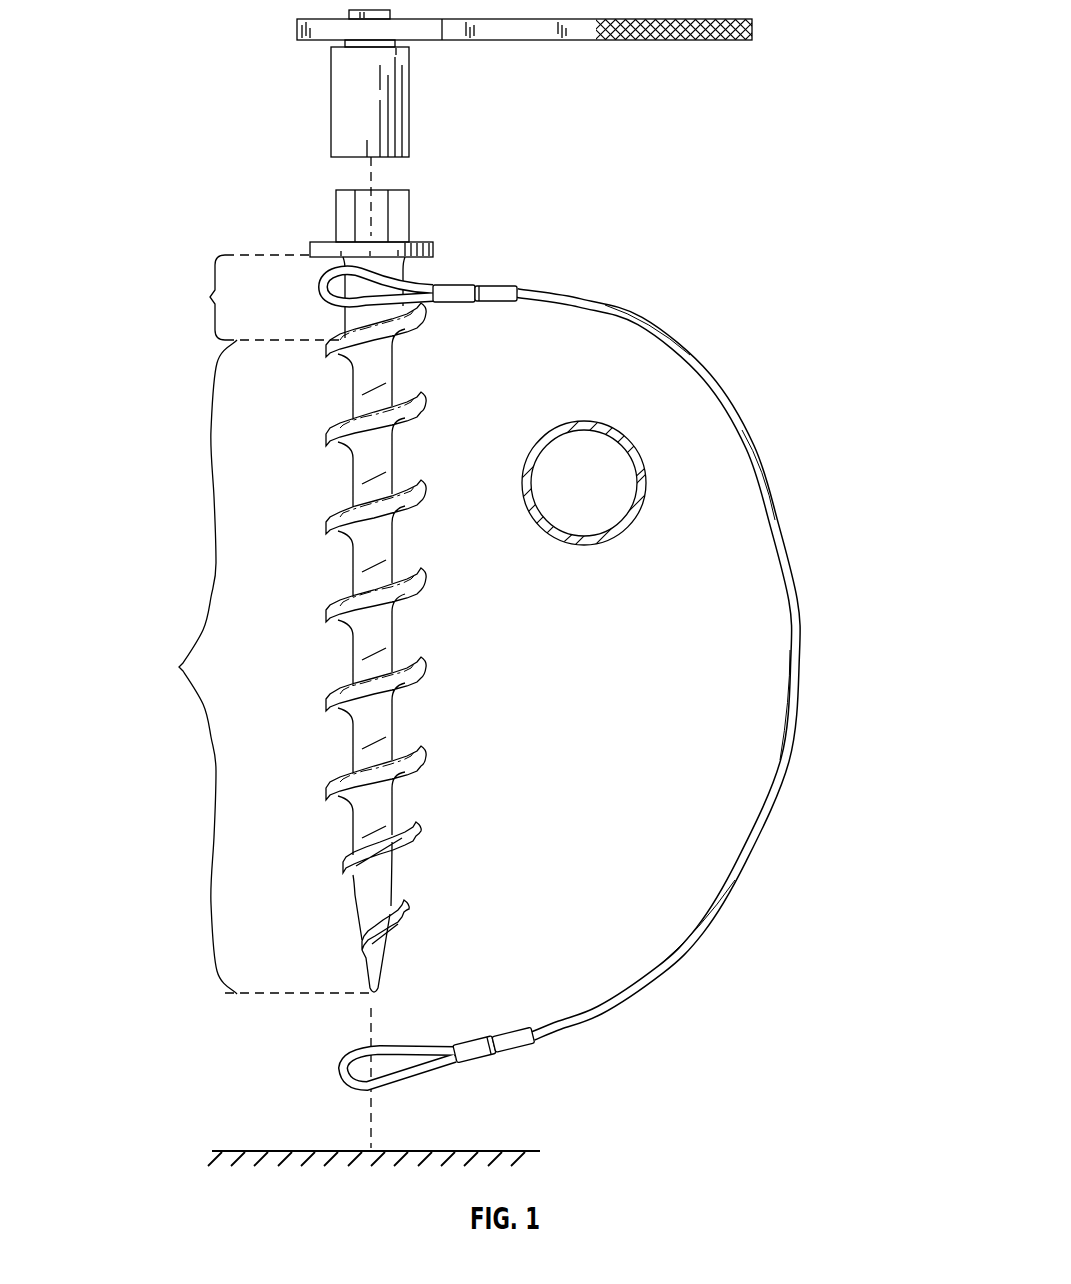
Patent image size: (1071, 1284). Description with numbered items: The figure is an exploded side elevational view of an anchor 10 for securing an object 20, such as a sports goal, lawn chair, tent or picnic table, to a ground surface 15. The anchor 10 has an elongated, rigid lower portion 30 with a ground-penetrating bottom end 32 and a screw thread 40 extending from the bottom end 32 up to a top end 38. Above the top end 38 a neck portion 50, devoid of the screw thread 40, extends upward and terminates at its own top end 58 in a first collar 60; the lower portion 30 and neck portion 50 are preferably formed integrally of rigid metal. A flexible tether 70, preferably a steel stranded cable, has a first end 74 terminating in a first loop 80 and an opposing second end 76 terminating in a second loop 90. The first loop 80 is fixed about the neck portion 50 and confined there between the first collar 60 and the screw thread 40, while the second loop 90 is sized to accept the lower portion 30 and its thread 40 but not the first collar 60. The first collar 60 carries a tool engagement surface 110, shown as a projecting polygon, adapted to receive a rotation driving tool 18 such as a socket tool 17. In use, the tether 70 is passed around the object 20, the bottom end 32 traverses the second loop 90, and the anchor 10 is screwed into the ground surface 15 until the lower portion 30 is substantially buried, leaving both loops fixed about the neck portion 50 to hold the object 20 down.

The anchor 10 is at (493, 235).
The ground surface 15 is at (272, 1150).
The socket tool 17 is at (383, 133).
The rotation driving tool 18 is at (297, 30).
The object 20 is at (622, 433).
The lower portion 30 is at (311, 625).
The bottom end 32 is at (382, 960).
The top end 38 is at (345, 312).
The screw thread 40 is at (423, 407).
The neck portion 50 is at (212, 297).
The top end 58 is at (330, 275).
The first collar 60 is at (318, 243).
The flexible tether 70 is at (596, 302).
The first end 74 is at (502, 285).
The second end 76 is at (470, 1057).
The first loop 80 is at (430, 283).
The second loop 90 is at (342, 1077).
The tool engagement surface 110 is at (358, 210).